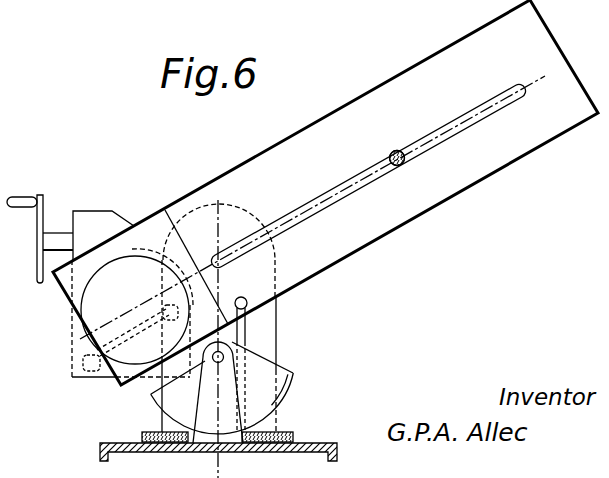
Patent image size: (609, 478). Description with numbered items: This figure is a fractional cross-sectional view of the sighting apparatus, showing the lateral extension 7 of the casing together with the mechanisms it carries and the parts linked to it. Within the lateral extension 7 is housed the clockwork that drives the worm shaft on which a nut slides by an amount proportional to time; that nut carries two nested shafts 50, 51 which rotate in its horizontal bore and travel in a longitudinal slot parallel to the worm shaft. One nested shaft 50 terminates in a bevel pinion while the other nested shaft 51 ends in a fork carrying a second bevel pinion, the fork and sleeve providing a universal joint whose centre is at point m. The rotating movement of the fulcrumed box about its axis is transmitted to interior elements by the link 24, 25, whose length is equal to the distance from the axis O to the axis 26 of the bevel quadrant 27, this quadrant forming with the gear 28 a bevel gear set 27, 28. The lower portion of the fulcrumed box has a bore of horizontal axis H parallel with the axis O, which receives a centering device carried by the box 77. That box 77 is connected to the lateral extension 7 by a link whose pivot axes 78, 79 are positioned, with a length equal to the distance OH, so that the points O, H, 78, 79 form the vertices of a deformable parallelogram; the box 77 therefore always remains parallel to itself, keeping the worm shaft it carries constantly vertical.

The lateral extension 7 is at (263, 343).
The link 24 is at (247, 304).
The link 25 is at (282, 400).
The axis of bevel quadrant 26 is at (226, 358).
The bevel quadrant 27 is at (149, 395).
The bevel gear 28 is at (142, 434).
The nested shaft 50 is at (401, 151).
The nested shaft 51 is at (403, 165).
The box 77 is at (82, 321).
The link axis 78 is at (88, 360).
The link axis 79 is at (178, 312).
The horizontal axis H is at (137, 306).
The axis O is at (207, 248).
The universal joint centre m is at (383, 144).